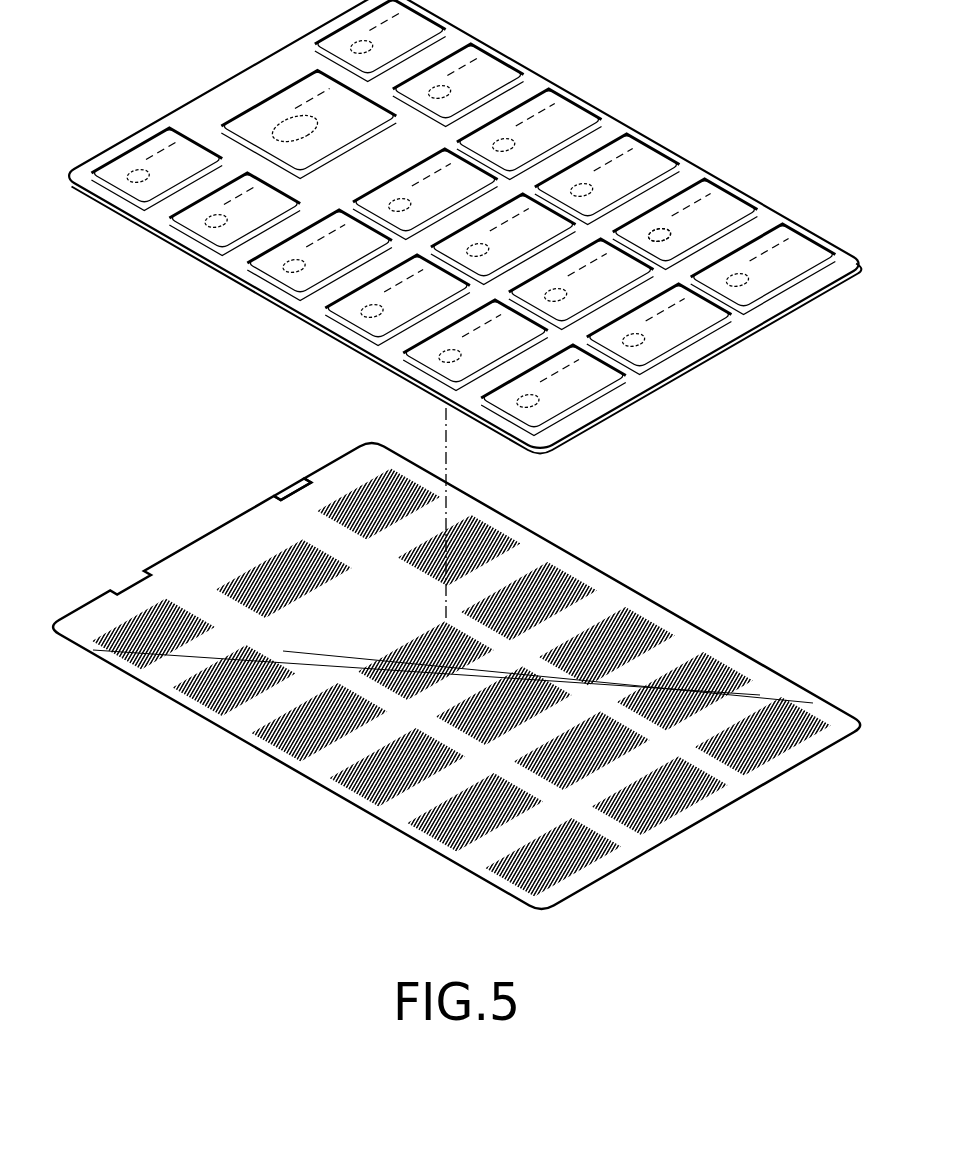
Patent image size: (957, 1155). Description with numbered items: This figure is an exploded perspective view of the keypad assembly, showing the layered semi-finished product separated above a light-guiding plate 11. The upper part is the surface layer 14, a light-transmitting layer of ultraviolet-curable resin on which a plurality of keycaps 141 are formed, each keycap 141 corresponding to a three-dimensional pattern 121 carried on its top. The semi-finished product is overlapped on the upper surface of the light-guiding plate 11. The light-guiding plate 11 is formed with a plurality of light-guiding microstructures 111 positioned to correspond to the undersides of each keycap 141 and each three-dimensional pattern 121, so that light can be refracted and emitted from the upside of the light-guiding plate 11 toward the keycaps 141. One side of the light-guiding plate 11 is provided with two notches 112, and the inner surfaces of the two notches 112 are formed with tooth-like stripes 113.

The light-guiding plate 11 is at (456, 653).
The light-guiding microstructures 111 is at (607, 646).
The notches 112 is at (292, 490).
The tooth-like stripes 113 is at (285, 493).
The three-dimensional pattern 121 is at (659, 235).
The surface layer 14 is at (464, 228).
The keycaps 141 is at (685, 224).